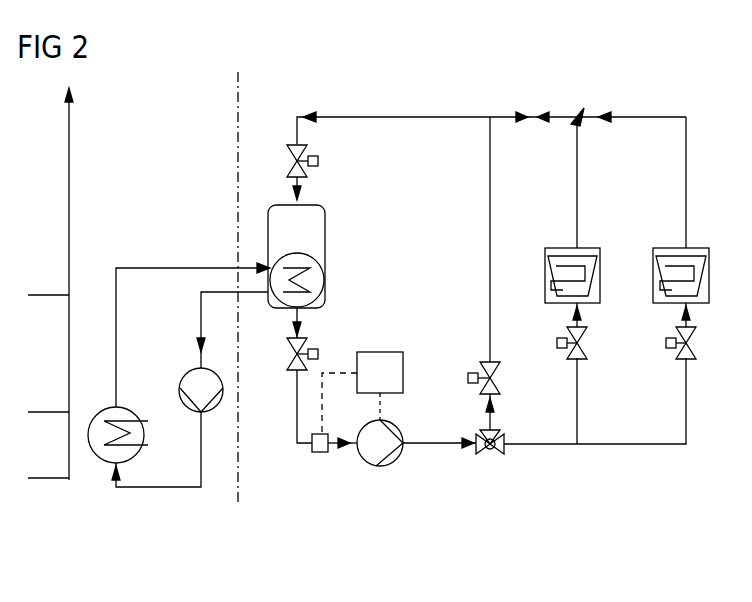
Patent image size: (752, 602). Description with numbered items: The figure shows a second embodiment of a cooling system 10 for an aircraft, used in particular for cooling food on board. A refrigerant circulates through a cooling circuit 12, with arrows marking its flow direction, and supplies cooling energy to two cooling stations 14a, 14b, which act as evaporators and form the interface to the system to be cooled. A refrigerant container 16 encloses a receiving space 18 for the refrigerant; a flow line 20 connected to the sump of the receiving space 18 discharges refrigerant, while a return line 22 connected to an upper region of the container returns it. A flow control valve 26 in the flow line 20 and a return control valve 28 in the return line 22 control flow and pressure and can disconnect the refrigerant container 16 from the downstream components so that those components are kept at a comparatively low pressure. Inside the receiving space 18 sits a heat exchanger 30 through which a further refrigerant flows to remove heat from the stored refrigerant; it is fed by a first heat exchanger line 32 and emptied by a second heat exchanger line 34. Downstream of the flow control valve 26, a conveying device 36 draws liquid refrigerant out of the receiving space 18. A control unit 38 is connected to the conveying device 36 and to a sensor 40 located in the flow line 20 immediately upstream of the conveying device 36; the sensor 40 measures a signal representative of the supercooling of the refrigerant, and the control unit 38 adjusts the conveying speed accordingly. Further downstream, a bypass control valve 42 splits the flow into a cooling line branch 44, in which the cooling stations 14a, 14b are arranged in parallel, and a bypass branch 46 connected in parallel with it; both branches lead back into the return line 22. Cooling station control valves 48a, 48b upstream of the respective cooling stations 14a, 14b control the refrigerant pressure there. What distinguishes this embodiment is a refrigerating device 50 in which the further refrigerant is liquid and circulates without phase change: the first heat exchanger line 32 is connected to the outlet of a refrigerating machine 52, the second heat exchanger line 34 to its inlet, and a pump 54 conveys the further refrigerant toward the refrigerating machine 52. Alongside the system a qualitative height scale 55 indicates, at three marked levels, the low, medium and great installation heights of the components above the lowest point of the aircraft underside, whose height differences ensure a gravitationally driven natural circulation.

The cooling system 10 is at (640, 84).
The cooling circuit 12 is at (618, 455).
The cooling station 14a is at (585, 248).
The cooling station 14b is at (695, 248).
The refrigerant container 16 is at (325, 212).
The receiving space 18 is at (318, 245).
The flow line 20 is at (297, 406).
The return line 22 is at (382, 117).
The flow control valve 26 is at (313, 347).
The return control valve 28 is at (320, 161).
The heat exchanger 30 is at (318, 282).
The first heat exchanger line 32 is at (160, 268).
The second heat exchanger line 34 is at (201, 322).
The conveying device 36 is at (375, 466).
The control unit 38 is at (403, 373).
The sensor 40 is at (320, 453).
The bypass control valve 42 is at (490, 460).
The cooling line branch 44 is at (540, 444).
The bypass branch 46 is at (490, 220).
The cooling station control valve 48a is at (557, 343).
The cooling station control valve 48b is at (666, 343).
The refrigerating device 50 is at (166, 495).
The refrigerating machine 52 is at (148, 440).
The pump 54 is at (180, 386).
The qualitative height scale 55 is at (69, 193).